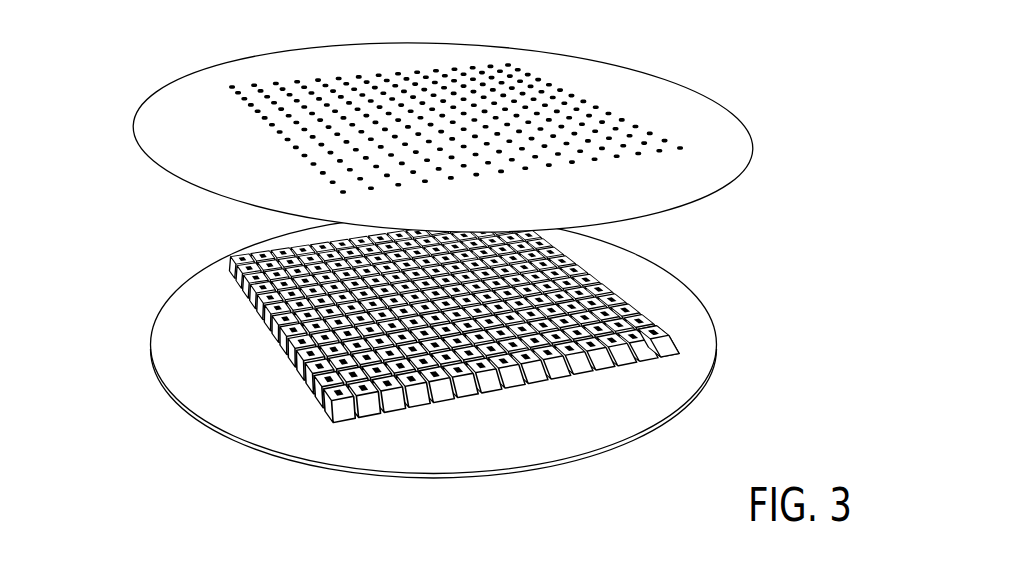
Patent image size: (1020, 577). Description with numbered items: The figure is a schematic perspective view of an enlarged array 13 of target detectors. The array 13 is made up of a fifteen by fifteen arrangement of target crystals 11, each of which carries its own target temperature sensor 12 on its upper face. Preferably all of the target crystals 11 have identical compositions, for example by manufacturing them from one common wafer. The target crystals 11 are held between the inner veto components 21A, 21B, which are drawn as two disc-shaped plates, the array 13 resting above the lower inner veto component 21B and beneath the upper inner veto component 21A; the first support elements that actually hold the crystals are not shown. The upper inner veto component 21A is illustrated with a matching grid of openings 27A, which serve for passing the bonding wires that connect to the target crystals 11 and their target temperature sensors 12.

The target crystal 11 is at (667, 348).
The target temperature sensor 12 is at (658, 337).
The array of target detectors 13 is at (486, 379).
The upper inner veto component 21A is at (413, 134).
The inner veto component 21B is at (172, 335).
The openings 27A is at (302, 89).